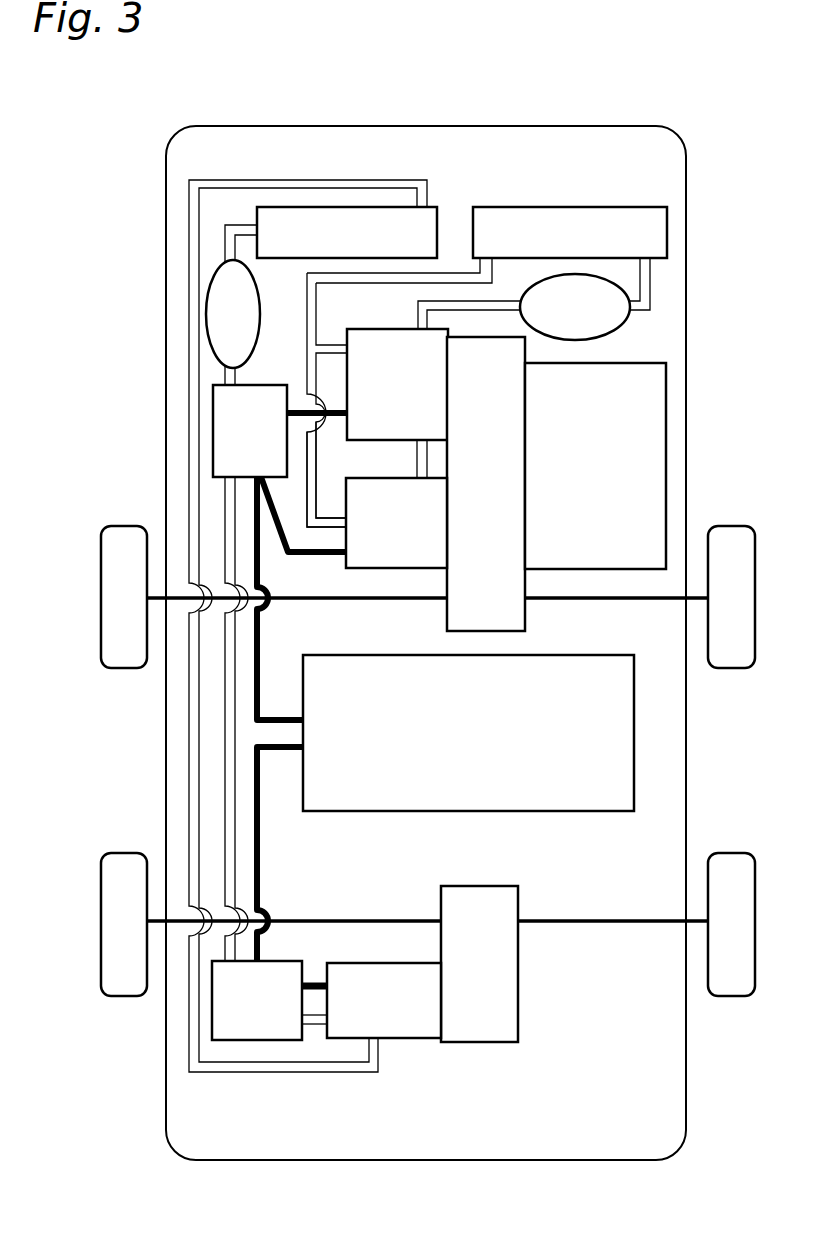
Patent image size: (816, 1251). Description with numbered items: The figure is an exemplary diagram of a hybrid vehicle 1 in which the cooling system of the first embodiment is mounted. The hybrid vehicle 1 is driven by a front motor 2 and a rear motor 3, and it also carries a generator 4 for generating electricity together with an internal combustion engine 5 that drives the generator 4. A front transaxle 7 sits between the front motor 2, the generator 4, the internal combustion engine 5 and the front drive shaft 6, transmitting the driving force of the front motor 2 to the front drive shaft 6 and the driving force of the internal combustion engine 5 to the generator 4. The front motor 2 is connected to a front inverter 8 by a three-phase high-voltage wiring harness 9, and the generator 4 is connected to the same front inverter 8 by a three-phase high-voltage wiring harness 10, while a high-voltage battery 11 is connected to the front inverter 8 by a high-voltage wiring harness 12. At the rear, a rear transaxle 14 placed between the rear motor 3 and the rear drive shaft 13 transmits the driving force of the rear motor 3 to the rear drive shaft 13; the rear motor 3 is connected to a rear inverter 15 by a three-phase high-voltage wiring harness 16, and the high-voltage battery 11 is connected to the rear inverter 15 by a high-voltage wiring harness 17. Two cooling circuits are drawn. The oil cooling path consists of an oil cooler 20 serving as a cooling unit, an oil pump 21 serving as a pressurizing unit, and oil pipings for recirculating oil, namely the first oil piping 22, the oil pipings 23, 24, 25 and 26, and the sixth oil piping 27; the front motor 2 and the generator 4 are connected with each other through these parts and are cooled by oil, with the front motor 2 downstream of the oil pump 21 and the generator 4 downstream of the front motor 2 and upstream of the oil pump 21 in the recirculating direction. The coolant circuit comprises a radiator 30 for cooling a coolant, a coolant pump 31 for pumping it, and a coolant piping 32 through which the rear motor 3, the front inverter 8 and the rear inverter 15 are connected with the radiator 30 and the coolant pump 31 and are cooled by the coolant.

The hybrid vehicle 1 is at (143, 162).
The front motor 2 is at (356, 477).
The rear motor 3 is at (413, 1040).
The generator 4 is at (386, 328).
The internal combustion engine 5 is at (668, 406).
The front drive shaft 6 is at (405, 600).
The front transaxle 7 is at (527, 617).
The front inverter 8 is at (266, 384).
The three-phase high-voltage wiring harness 9 is at (296, 556).
The three-phase high-voltage wiring harness 10 is at (300, 410).
The high-voltage battery 11 is at (586, 813).
The high-voltage wiring harness 12 is at (262, 620).
The rear drive shaft 13 is at (397, 918).
The rear transaxle 14 is at (520, 977).
The rear inverter 15 is at (262, 1043).
The three-phase high-voltage wiring harness 16 is at (313, 981).
The high-voltage wiring harness 17 is at (262, 846).
The oil cooler 20 is at (629, 206).
The oil pump 21 is at (621, 327).
The first oil piping 22 is at (466, 311).
The oil piping 23 is at (651, 302).
The oil piping 24 is at (452, 272).
The oil piping 25 is at (334, 345).
The oil piping 26 is at (330, 517).
The sixth oil piping 27 is at (416, 459).
The radiator 30 is at (297, 259).
The coolant pump 31 is at (262, 314).
The coolant piping 32 is at (321, 180).